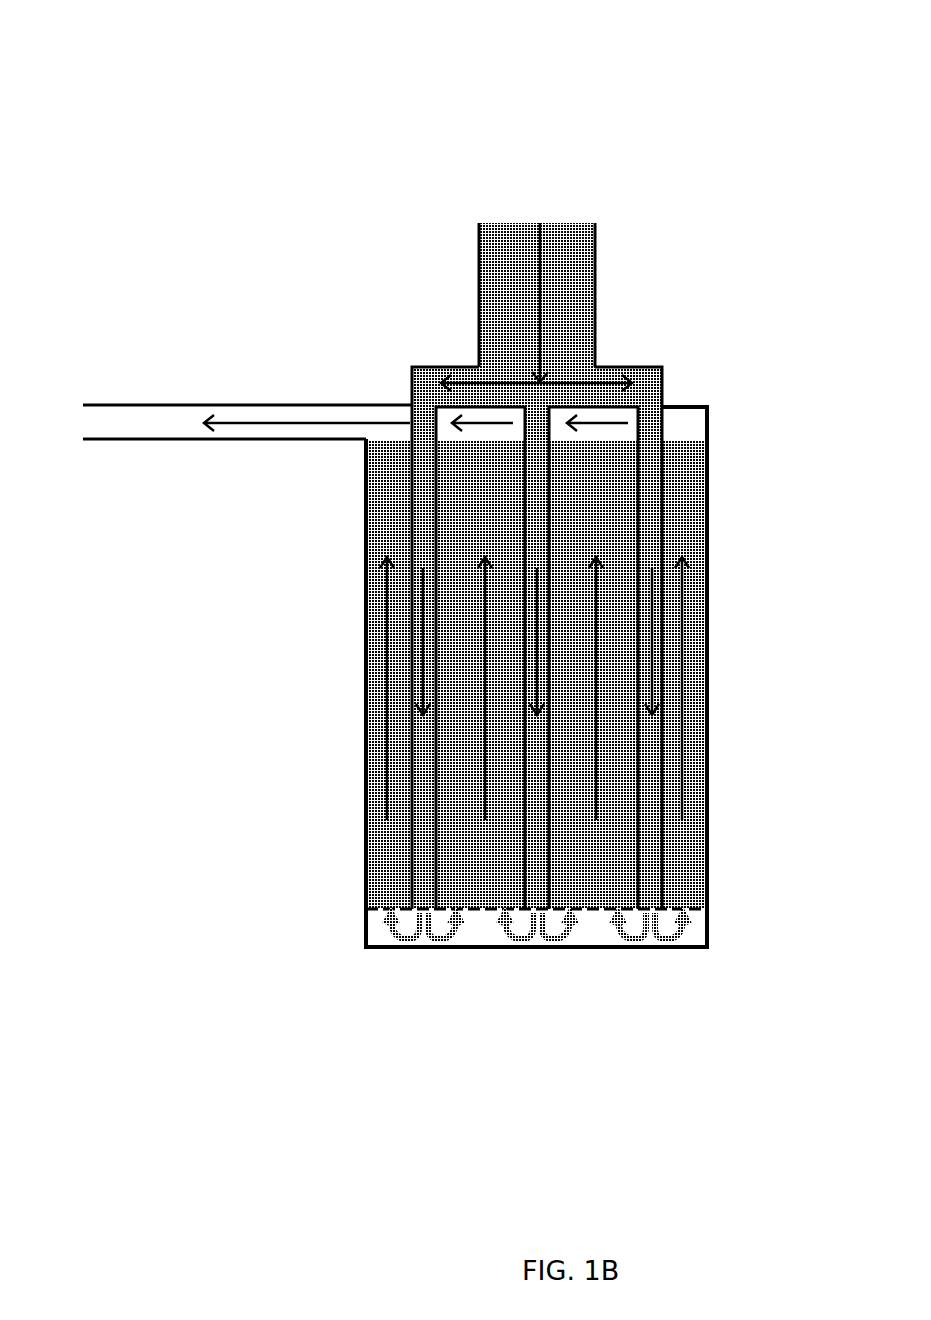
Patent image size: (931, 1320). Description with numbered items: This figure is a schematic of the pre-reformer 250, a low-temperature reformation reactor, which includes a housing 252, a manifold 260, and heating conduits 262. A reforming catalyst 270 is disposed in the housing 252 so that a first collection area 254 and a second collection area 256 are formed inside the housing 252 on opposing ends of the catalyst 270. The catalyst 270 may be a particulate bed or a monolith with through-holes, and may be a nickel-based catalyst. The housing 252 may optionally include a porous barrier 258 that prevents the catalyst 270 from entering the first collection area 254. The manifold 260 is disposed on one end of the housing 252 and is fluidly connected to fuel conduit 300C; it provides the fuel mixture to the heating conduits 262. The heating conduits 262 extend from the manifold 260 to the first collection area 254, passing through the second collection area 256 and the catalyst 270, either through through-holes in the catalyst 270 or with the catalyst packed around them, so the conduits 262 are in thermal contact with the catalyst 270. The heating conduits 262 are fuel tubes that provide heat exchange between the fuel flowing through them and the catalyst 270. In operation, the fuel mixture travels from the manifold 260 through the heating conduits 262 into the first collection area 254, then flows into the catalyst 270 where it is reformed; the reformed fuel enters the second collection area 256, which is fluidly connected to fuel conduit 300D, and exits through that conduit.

The pre-reformer 250 is at (328, 128).
The housing 252 is at (708, 600).
The first collection area 254 is at (725, 908).
The second collection area 256 is at (725, 405).
The porous barrier 258 is at (595, 909).
The manifold 260 is at (605, 362).
The heating conduits 262 is at (660, 507).
The reforming catalyst 270 is at (585, 460).
The fuel conduit 300C is at (594, 303).
The fuel conduit 300D is at (263, 405).